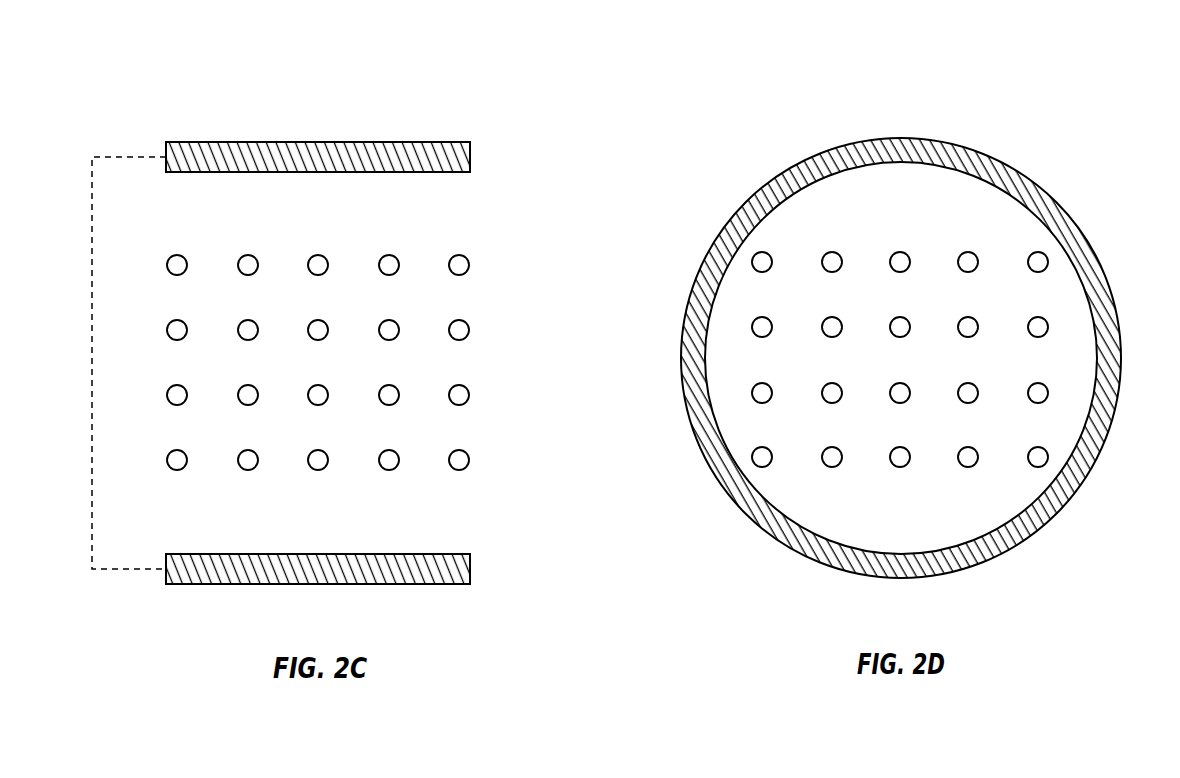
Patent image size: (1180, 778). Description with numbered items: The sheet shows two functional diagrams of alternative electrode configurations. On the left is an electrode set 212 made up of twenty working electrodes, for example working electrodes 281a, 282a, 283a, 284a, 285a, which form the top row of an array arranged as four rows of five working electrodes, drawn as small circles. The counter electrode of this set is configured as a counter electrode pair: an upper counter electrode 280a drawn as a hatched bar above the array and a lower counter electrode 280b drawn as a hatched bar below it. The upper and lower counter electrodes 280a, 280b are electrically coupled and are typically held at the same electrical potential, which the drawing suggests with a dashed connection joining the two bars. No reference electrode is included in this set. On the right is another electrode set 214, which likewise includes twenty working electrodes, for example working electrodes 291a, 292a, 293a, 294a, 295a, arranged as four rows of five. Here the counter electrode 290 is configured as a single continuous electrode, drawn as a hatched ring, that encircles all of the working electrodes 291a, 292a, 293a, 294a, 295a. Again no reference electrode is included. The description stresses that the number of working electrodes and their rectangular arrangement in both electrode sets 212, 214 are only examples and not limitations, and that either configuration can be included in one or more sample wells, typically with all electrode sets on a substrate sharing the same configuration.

In FIG. 2C, the electrode set 212 is at (350, 84).
In FIG. 2D, the electrode set 214 is at (1070, 82).
In FIG. 2C, the upper counter electrode 280a is at (210, 142).
In FIG. 2C, the lower counter electrode 280b is at (210, 583).
In FIG. 2C, the working electrode 281a is at (177, 275).
In FIG. 2C, the working electrode 282a is at (248, 255).
In FIG. 2C, the working electrode 283a is at (318, 255).
In FIG. 2C, the working electrode 284a is at (389, 275).
In FIG. 2C, the working electrode 285a is at (459, 255).
In FIG. 2D, the counter electrode 290 is at (998, 168).
In FIG. 2D, the working electrode 291a is at (762, 272).
In FIG. 2D, the working electrode 292a is at (832, 252).
In FIG. 2D, the working electrode 293a is at (900, 252).
In FIG. 2D, the working electrode 294a is at (968, 272).
In FIG. 2D, the working electrode 295a is at (1038, 252).